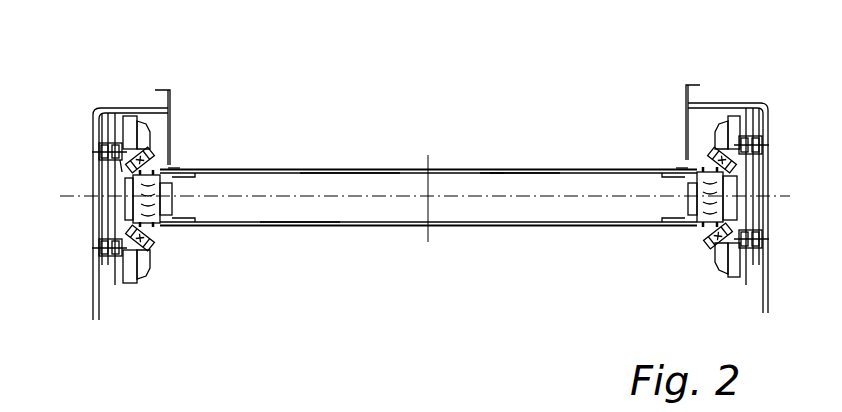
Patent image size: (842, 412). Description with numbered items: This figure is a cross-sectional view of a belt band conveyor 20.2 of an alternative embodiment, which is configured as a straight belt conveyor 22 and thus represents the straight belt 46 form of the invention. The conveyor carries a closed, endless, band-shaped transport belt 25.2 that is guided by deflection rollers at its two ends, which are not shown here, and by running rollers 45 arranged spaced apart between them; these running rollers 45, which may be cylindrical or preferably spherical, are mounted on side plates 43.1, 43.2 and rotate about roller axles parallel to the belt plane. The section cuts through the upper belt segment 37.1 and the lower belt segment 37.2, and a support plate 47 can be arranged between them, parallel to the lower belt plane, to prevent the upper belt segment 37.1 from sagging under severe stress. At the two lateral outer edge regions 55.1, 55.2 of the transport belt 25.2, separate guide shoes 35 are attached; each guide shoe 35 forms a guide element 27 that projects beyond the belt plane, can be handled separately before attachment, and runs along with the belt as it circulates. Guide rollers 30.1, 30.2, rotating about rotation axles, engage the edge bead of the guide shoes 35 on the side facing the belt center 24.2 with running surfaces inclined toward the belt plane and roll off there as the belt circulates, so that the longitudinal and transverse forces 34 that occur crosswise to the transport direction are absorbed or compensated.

The belt band conveyor 20.2 is at (413, 92).
The straight belt conveyor 22 is at (474, 262).
The belt center 24.2 is at (432, 158).
The transport belt 25.2 is at (345, 169).
The guide element 27 is at (116, 162).
The guide roller 30.1 is at (150, 158).
The guide roller 30.2 is at (150, 248).
The longitudinal and transverse forces 34 is at (266, 156).
The guide shoe 35 is at (125, 172).
The upper belt segment 37.1 is at (514, 168).
The lower belt segment 37.2 is at (297, 228).
The side plate 43.1 is at (97, 280).
The side plate 43.2 is at (773, 281).
The running roller 45 is at (157, 214).
The straight belt 46 is at (387, 278).
The support plate 47 is at (497, 173).
The lateral outer edge region 55.1 is at (179, 162).
The lateral outer edge region 55.2 is at (676, 155).